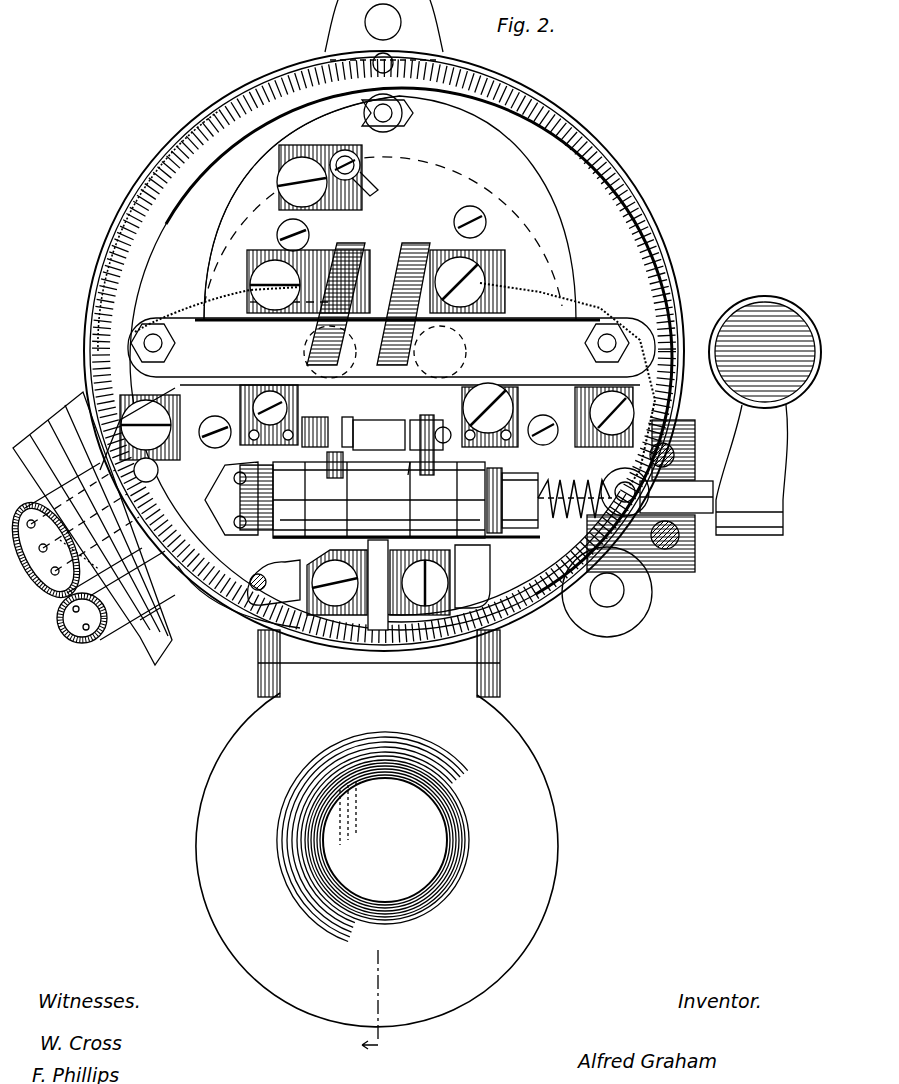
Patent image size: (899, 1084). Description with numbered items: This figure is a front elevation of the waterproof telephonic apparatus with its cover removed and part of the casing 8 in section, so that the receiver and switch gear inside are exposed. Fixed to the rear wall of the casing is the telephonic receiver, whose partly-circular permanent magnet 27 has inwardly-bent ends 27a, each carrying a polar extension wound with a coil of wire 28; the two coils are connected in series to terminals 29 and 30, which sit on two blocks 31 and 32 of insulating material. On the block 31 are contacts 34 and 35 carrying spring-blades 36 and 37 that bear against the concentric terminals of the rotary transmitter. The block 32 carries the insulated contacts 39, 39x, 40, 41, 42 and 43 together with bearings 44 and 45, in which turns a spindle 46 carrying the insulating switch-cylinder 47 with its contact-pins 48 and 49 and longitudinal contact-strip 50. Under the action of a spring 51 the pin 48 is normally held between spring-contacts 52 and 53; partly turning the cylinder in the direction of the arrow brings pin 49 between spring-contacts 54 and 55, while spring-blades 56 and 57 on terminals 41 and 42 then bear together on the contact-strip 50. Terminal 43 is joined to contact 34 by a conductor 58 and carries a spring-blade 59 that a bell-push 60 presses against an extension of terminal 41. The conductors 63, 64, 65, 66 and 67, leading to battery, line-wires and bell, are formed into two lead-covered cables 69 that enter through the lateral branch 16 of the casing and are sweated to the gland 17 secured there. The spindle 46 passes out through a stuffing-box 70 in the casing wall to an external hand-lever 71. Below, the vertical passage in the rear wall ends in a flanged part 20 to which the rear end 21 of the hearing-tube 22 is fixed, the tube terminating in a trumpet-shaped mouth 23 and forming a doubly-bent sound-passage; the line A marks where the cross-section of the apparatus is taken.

The casing 8 is at (245, 97).
The branch opening 16 is at (98, 528).
The gland or bush 17 is at (170, 640).
The flanged part 20 is at (500, 640).
The rear end of hearing-tube 21 is at (500, 682).
The hearing-tube 22 is at (373, 837).
The trumpet-shaped mouth 23 is at (377, 860).
The permanent magnet 27 is at (401, 359).
The inwardly-bent ends of magnet 27a is at (391, 347).
The coil of wire 28 is at (372, 352).
The terminal 29 is at (345, 158).
The terminal 30 is at (257, 415).
The block of insulating material 31 is at (383, 229).
The block of insulating material 32 is at (502, 556).
The contact 34 is at (298, 270).
The contact 35 is at (470, 268).
The spring-blade 36 is at (336, 304).
The spring-blade 37 is at (403, 304).
The insulated contact 39 is at (552, 382).
The insulated contact 39x is at (379, 433).
The terminal 40 is at (504, 415).
The terminal 41 is at (264, 562).
The terminal 42 is at (425, 583).
The terminal 43 is at (380, 433).
The bearing 44 is at (269, 497).
The bearing 45 is at (486, 494).
The spindle 46 is at (252, 494).
The switch-cylinder 47 is at (412, 478).
The contact-pin 48 is at (425, 484).
The contact-pin 49 is at (347, 473).
The contact-strip 50 is at (380, 507).
The spring 51 is at (573, 507).
The spring-contact 52 is at (414, 420).
The spring-contact 53 is at (443, 427).
The spring-contact 54 is at (322, 417).
The spring-contact 55 is at (355, 418).
The spring-blade 56 is at (337, 576).
The spring-blade 57 is at (409, 584).
The conductor 58 is at (205, 297).
The spring-blade 59 is at (239, 583).
The bell-push 60 is at (256, 592).
The conductor 63 is at (222, 152).
The conductor 64 is at (78, 642).
The line-wire 65 is at (626, 197).
The line-wire 66 is at (50, 600).
The conductor 67 is at (108, 662).
The lead-covered cables 69 is at (47, 503).
The stuffing-box 70 is at (670, 560).
The hand-lever 71 is at (765, 415).
The section line A A is at (378, 1003).